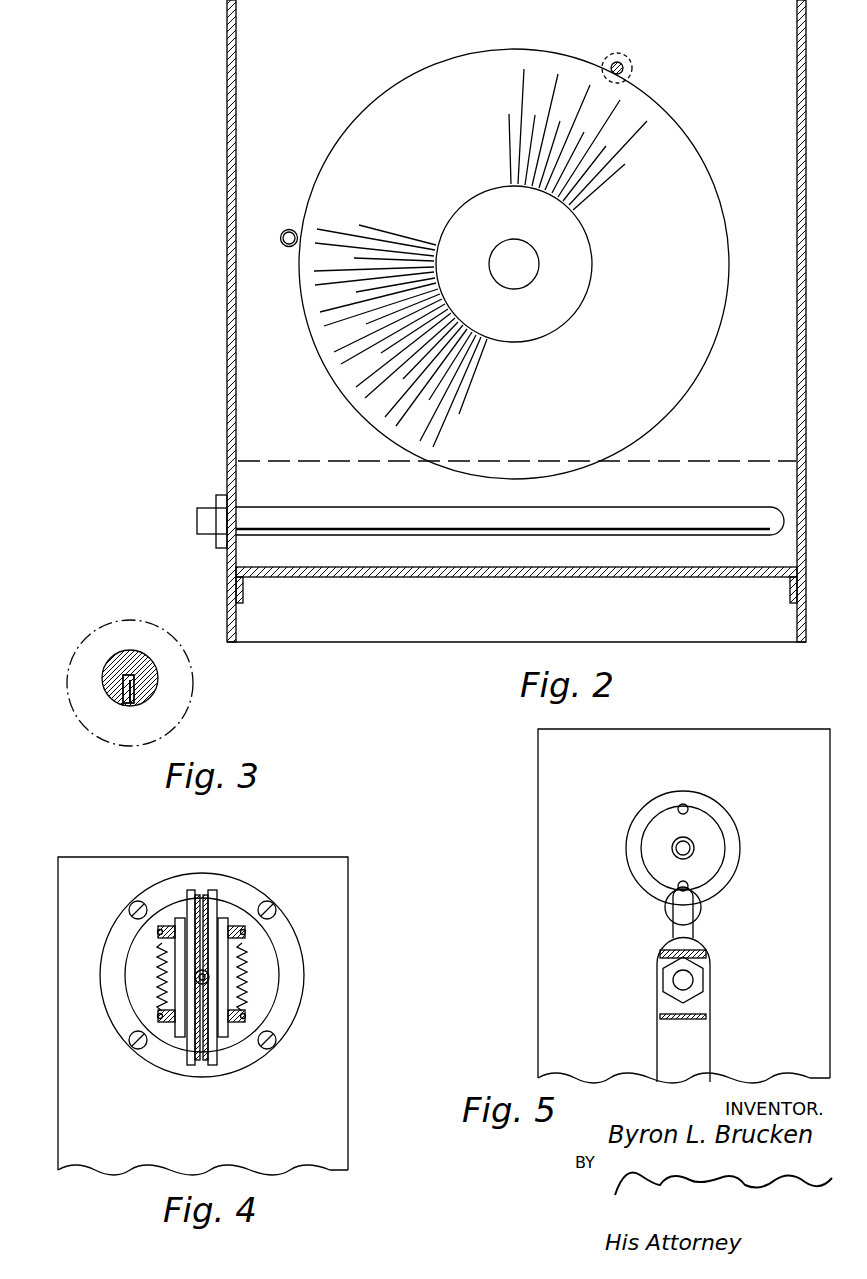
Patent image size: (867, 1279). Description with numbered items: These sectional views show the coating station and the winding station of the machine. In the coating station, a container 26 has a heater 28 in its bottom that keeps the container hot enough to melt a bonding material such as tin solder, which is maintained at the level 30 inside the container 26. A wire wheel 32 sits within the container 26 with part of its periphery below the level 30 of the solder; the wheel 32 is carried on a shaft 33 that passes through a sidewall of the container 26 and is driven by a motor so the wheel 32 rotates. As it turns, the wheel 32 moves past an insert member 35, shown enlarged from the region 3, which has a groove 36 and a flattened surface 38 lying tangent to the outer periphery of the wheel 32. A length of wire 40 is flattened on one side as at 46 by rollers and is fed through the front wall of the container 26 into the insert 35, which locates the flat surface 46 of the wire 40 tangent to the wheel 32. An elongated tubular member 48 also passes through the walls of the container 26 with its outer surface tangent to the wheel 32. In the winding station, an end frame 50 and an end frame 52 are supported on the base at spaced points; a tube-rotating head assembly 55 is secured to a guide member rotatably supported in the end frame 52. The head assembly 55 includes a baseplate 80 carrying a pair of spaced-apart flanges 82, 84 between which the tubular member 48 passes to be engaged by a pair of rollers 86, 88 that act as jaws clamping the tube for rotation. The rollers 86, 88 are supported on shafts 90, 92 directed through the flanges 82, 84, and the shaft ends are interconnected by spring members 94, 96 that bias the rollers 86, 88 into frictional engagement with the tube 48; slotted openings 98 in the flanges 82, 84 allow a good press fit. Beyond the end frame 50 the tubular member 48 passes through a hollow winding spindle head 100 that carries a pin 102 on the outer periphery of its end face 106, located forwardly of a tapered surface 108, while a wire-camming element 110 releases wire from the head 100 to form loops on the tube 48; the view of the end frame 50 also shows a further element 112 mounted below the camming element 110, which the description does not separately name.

In FIG. 2, the container 26 is at (227, 50).
In FIG. 2, the heater 28 is at (392, 518).
In FIG. 2, the level 30 is at (710, 461).
In FIG. 2, the wire wheel 32 is at (660, 150).
In FIG. 2, the shaft 33 is at (530, 277).
In FIG. 2, the insert member 35 is at (614, 60).
In FIG. 3, the insert member 35 is at (145, 662).
In FIG. 2, the region 3 is at (633, 66).
In FIG. 2, the tubular member 48 is at (288, 247).
In FIG. 4, the tubular member 48 is at (210, 978).
In FIG. 5, the tubular member 48 is at (676, 853).
In FIG. 3, the groove 36 is at (157, 695).
In FIG. 3, the flattened surface 38 is at (118, 704).
In FIG. 3, the wire 40 is at (113, 680).
In FIG. 3, the flattened surface 46 is at (129, 705).
In FIG. 5, the end frame 50 is at (550, 993).
In FIG. 4, the end frame 52 is at (320, 1097).
In FIG. 4, the tube-rotating head assembly 55 is at (103, 945).
In FIG. 4, the baseplate 80 is at (140, 947).
In FIG. 4, the flange 82 is at (225, 895).
In FIG. 4, the flange 84 is at (182, 893).
In FIG. 4, the roller 86 is at (203, 893).
In FIG. 4, the roller 88 is at (205, 1062).
In FIG. 4, the shaft 90 is at (250, 937).
In FIG. 4, the shaft 92 is at (245, 1020).
In FIG. 4, the spring member 94 is at (157, 973).
In FIG. 4, the spring member 96 is at (250, 972).
In FIG. 4, the openings 98 is at (163, 1017).
In FIG. 5, the winding spindle head 100 is at (628, 834).
In FIG. 5, the pin 102 is at (688, 806).
In FIG. 5, the end face 106 is at (712, 830).
In FIG. 5, the tapered surface 108 is at (655, 805).
In FIG. 5, the wire-camming element 110 is at (668, 912).
In FIG. 5, the support arm 112 is at (693, 1042).